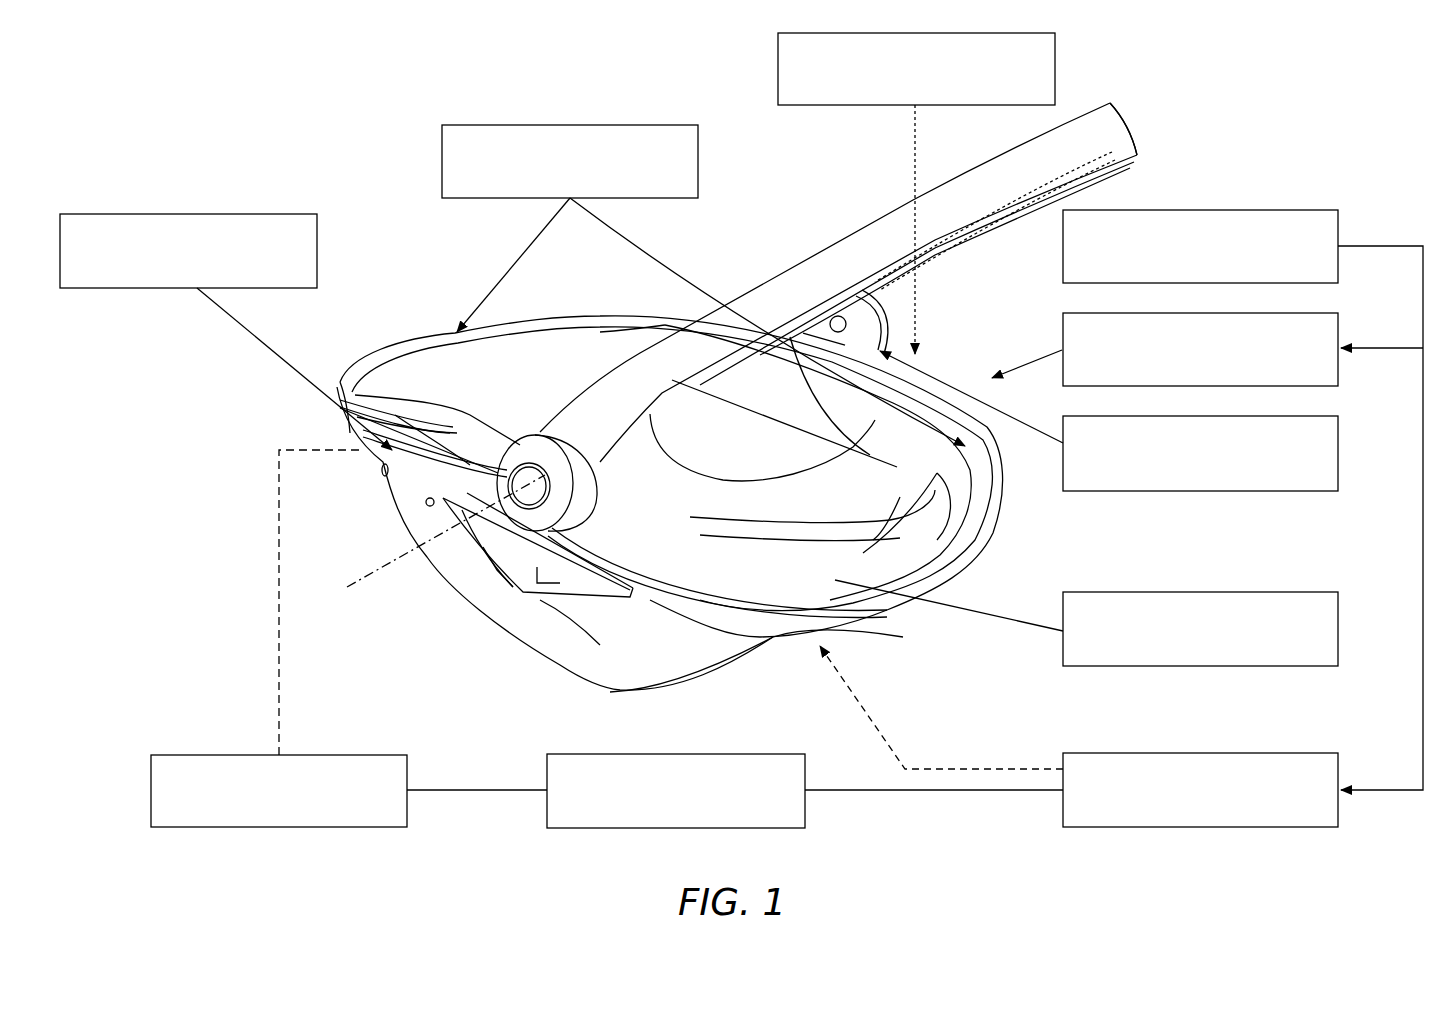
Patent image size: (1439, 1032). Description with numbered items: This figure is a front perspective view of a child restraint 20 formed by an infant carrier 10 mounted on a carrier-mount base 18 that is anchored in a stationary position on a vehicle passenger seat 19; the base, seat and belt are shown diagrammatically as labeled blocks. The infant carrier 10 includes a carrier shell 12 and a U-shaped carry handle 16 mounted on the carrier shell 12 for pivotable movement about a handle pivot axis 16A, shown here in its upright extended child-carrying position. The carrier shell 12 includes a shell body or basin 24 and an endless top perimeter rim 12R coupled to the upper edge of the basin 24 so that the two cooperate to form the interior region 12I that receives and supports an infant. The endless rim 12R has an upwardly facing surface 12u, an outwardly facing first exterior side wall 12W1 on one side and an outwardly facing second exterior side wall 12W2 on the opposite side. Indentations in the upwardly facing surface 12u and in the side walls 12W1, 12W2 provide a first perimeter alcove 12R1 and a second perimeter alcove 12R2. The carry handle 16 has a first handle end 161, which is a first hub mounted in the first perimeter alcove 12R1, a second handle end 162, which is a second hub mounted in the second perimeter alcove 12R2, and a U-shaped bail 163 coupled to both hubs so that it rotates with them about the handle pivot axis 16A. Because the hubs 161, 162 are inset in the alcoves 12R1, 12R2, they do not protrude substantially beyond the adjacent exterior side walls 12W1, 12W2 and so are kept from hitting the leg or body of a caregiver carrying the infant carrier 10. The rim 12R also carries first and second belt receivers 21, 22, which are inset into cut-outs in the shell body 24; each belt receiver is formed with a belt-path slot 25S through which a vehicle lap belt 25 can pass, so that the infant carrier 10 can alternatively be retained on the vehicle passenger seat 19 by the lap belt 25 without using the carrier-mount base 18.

The infant carrier 10 is at (1063, 331).
The carrier shell 12 is at (430, 304).
The endless rim 12R is at (570, 125).
The first perimeter alcove 12R1 is at (1245, 592).
The second perimeter alcove 12R2 is at (1170, 491).
The first exterior side wall 12W1 is at (186, 214).
The second exterior side wall 12W2 is at (778, 68).
The interior region 12I is at (941, 498).
The upwardly facing surface 12u is at (870, 637).
The carry handle 16 is at (883, 200).
The handle pivot axis 16A is at (378, 568).
The first handle end 161 is at (531, 528).
The second handle end 162 is at (851, 302).
The U-shaped bail 163 is at (1101, 127).
The carrier-mount base 18 is at (1200, 753).
The vehicle passenger seat 19 is at (677, 754).
The child restraint 20 is at (1198, 210).
The first belt receiver 21 is at (439, 476).
The second belt receiver 22 is at (656, 328).
The shell body 24 is at (551, 624).
The vehicle lap belt 25 is at (222, 755).
The belt-path slot 25S is at (430, 430).